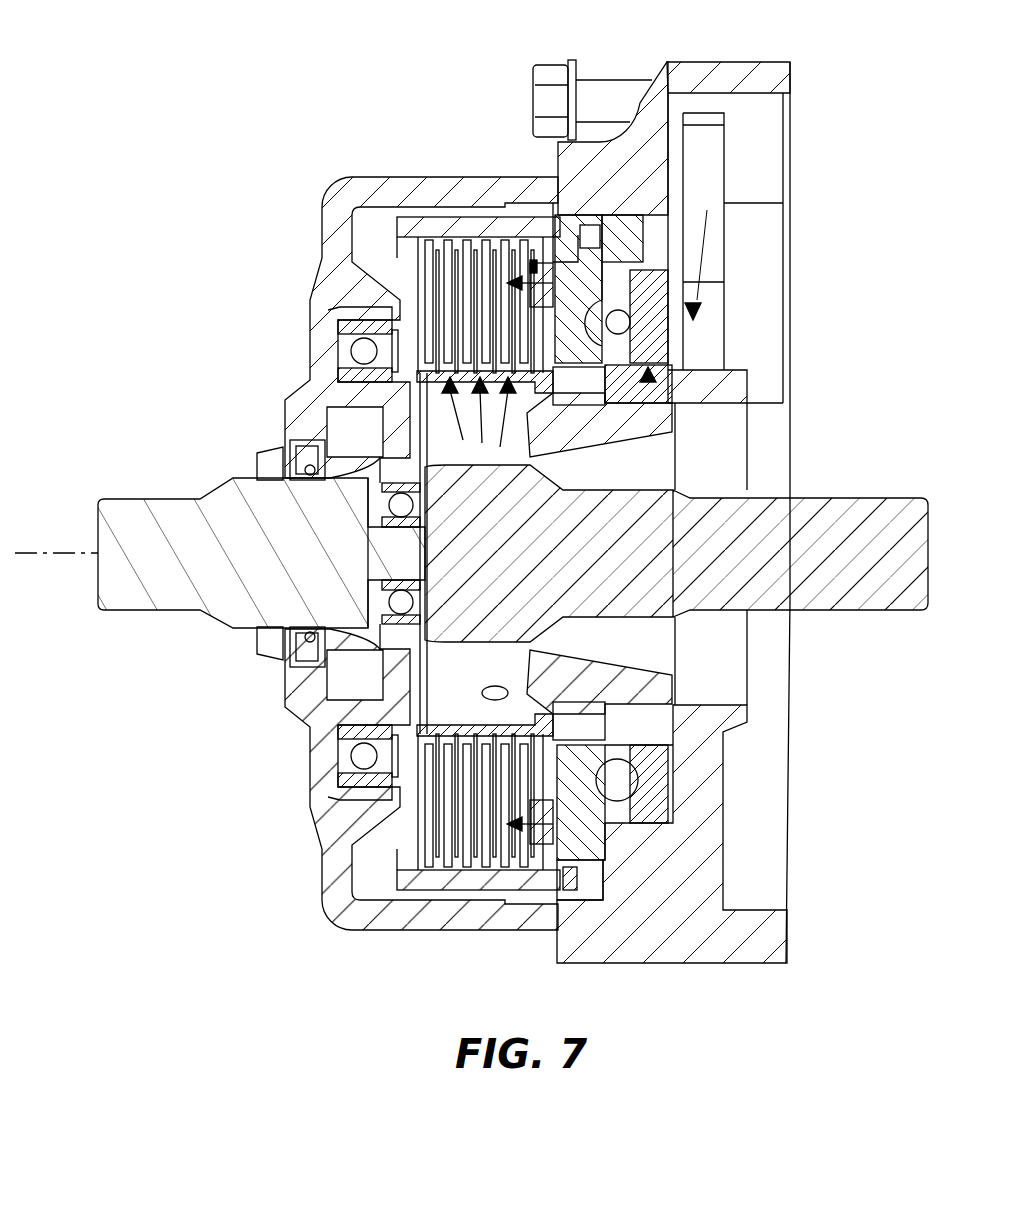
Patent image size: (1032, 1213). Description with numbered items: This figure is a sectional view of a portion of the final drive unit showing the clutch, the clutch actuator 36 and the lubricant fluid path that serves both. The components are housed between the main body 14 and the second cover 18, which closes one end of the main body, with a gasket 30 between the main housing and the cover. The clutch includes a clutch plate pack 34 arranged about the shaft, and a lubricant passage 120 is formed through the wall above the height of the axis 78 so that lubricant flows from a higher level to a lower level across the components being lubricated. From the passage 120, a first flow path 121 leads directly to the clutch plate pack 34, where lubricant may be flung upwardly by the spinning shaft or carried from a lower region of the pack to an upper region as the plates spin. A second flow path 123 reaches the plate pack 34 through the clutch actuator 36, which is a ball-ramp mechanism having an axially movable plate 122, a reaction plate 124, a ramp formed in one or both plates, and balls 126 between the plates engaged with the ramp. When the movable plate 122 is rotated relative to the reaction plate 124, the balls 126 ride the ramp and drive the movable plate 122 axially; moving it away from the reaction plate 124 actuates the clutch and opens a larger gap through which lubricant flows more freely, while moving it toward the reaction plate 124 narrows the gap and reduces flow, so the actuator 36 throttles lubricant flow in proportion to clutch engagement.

The main body 14 is at (738, 62).
The second cover 18 is at (417, 177).
The gasket 30 is at (478, 205).
The clutch plate pack 34 is at (440, 292).
The clutch actuator 36 is at (594, 213).
The axis 78 is at (46, 555).
The lubricant passage 120 is at (714, 322).
The first flow path 121 is at (710, 373).
The movable plate 122 is at (619, 235).
The second flow path 123 is at (612, 273).
The reaction plate 124 is at (655, 335).
The balls 126 is at (616, 300).